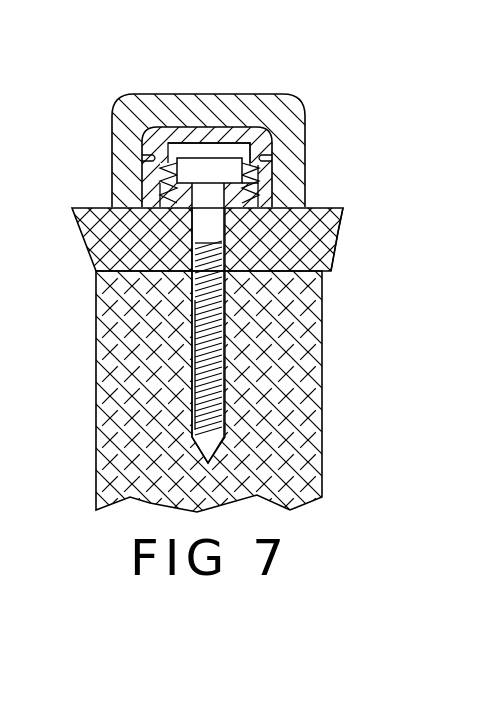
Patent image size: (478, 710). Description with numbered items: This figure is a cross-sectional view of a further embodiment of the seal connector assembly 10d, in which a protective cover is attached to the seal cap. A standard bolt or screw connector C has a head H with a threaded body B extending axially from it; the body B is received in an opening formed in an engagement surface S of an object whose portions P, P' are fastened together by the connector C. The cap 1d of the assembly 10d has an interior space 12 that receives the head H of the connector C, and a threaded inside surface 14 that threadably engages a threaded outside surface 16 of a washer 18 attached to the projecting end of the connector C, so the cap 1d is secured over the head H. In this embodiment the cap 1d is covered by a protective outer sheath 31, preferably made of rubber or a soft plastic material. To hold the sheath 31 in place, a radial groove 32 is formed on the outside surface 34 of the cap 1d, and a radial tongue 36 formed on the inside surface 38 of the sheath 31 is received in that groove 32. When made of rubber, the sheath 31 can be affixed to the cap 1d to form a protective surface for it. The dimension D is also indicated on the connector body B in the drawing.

The assembly 10d is at (188, 72).
The protective outer sheath 31 is at (283, 103).
The cap 1d is at (262, 138).
The inside surface 38 is at (250, 146).
The radial groove 32 is at (143, 159).
The radial tongue 36 is at (270, 160).
The outside surface 34 is at (162, 183).
The threaded inside surface 14 is at (263, 176).
The interior space 12 is at (127, 276).
The head H is at (147, 157).
The threaded outside surface 16 is at (172, 200).
The washer 18 is at (95, 285).
The thread diameter D is at (192, 413).
The engagement surface S is at (343, 212).
The portion P is at (360, 294).
The portion P' is at (245, 391).
The connector C is at (192, 262).
The threaded body B is at (207, 383).